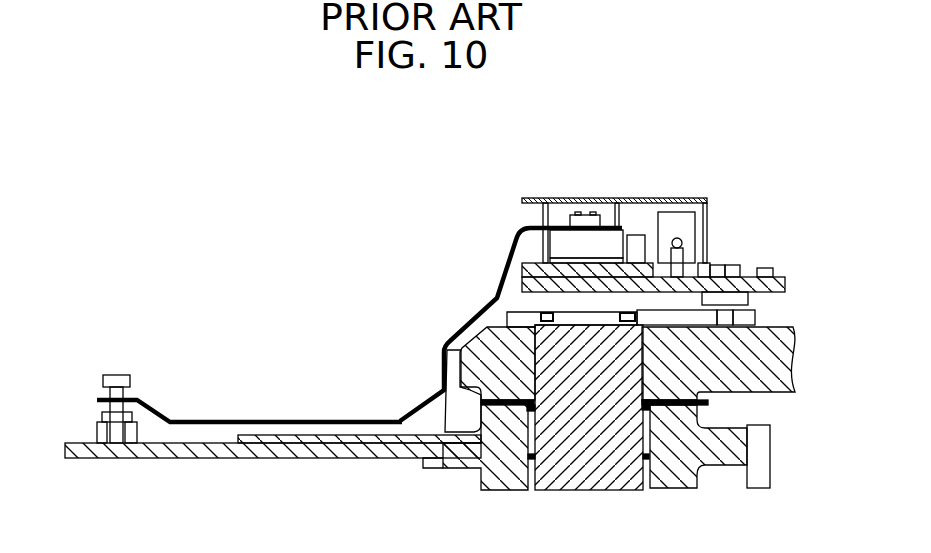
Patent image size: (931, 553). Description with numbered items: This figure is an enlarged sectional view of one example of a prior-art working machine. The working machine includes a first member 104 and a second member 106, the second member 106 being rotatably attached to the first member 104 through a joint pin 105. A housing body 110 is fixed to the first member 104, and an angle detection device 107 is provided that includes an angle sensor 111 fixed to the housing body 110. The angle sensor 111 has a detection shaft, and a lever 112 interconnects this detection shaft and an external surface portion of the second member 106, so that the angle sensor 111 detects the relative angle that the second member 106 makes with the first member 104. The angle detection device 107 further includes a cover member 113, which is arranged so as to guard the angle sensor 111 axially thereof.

The first member 104 is at (782, 325).
The joint pin 105 is at (555, 360).
The second member 106 is at (67, 442).
The angle detection device 107 is at (420, 208).
The housing body 110 is at (533, 257).
The angle sensor 111 is at (608, 238).
The lever 112 is at (262, 419).
The cover member 113 is at (673, 198).